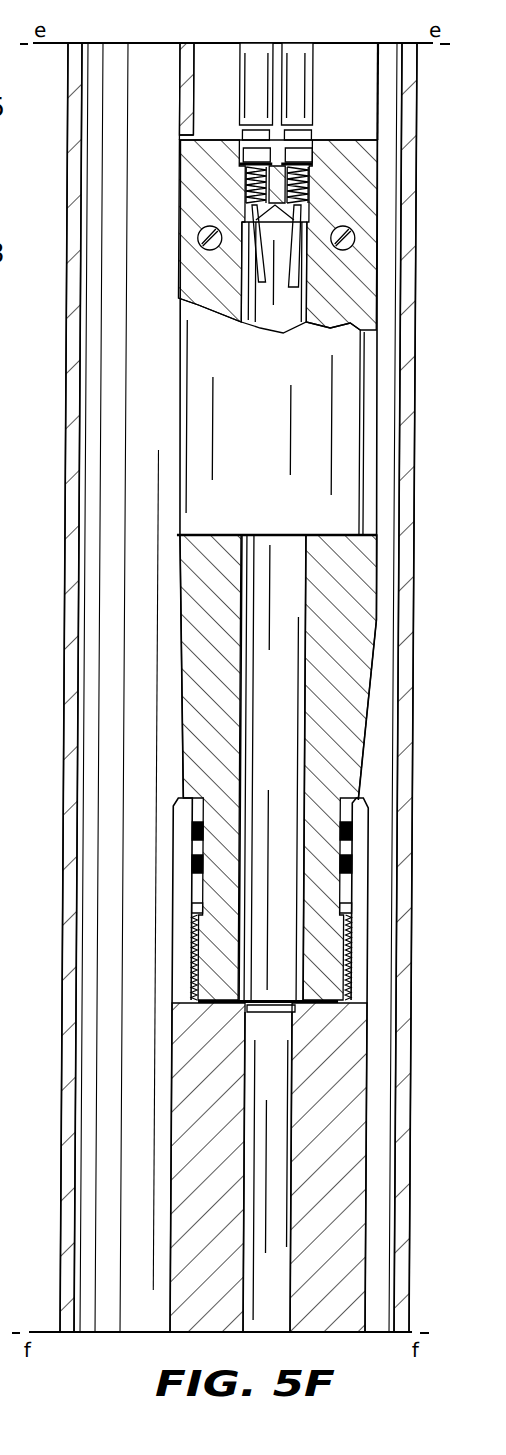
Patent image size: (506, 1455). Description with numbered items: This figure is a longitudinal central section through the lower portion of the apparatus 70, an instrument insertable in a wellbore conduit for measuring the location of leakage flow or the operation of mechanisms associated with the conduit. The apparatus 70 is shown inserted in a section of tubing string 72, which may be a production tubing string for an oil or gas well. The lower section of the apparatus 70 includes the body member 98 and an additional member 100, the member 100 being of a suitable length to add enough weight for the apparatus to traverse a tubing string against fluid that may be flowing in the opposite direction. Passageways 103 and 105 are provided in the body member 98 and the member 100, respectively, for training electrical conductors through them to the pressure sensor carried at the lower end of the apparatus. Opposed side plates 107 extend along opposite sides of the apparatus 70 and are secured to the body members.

The apparatus 70 is at (166, 513).
The tubing string 72 is at (70, 427).
The body member 98 is at (379, 195).
The additional member 100 is at (177, 1088).
The passageway 103 is at (246, 699).
The passageway 105 is at (253, 1106).
The side plates 107 is at (180, 401).